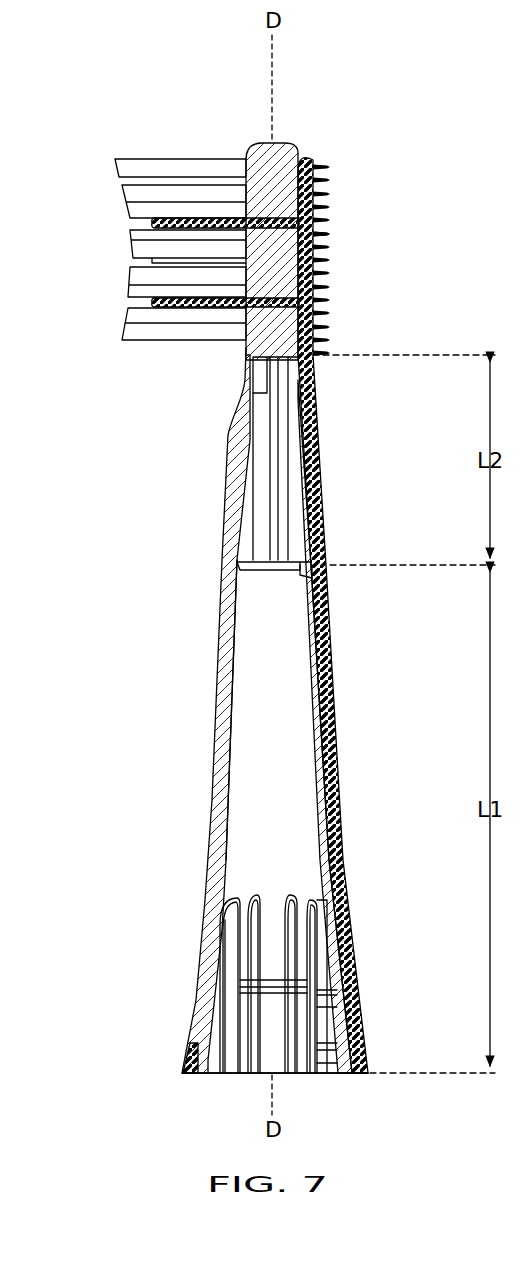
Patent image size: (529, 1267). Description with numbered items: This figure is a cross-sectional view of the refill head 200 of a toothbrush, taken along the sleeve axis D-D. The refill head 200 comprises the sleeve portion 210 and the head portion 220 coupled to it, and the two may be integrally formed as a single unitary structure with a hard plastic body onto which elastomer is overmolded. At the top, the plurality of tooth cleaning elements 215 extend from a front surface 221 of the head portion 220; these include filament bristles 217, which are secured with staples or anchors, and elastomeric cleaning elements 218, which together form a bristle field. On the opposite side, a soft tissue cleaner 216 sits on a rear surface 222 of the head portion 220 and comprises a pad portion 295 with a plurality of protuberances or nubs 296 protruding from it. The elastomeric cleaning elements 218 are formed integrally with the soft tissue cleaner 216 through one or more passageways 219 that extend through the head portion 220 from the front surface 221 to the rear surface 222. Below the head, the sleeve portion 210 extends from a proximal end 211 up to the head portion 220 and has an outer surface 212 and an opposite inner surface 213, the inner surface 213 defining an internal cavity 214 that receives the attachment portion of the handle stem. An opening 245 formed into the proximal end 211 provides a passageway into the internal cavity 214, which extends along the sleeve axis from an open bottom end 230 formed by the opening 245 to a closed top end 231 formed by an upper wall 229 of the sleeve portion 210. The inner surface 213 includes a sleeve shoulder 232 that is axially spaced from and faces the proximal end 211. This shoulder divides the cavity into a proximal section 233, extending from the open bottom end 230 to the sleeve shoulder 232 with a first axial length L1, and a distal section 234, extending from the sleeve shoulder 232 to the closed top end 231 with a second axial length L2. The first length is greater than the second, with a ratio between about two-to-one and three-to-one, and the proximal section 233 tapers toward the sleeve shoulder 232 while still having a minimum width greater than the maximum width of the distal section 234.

The refill head 200 is at (62, 84).
The sleeve portion 210 is at (209, 778).
The proximal end 211 is at (198, 1075).
The outer surface 212 is at (205, 958).
The inner surface 213 is at (228, 828).
The internal cavity 214 is at (286, 836).
The tooth cleaning elements 215 is at (141, 210).
The soft tissue cleaner 216 is at (314, 207).
The filament bristles 217 is at (138, 170).
The elastomeric cleaning elements 218 is at (150, 222).
The passageways 219 is at (257, 213).
The head portion 220 is at (281, 158).
The front surface 221 is at (246, 200).
The rear surface 222 is at (278, 268).
The upper wall 229 is at (284, 358).
The open bottom end 230 is at (233, 1075).
The closed top end 231 is at (273, 360).
The sleeve shoulder 232 is at (306, 580).
The proximal section 233 is at (260, 709).
The distal section 234 is at (281, 496).
The opening 245 is at (340, 1075).
The pad portion 295 is at (303, 163).
The nubs 296 is at (318, 232).